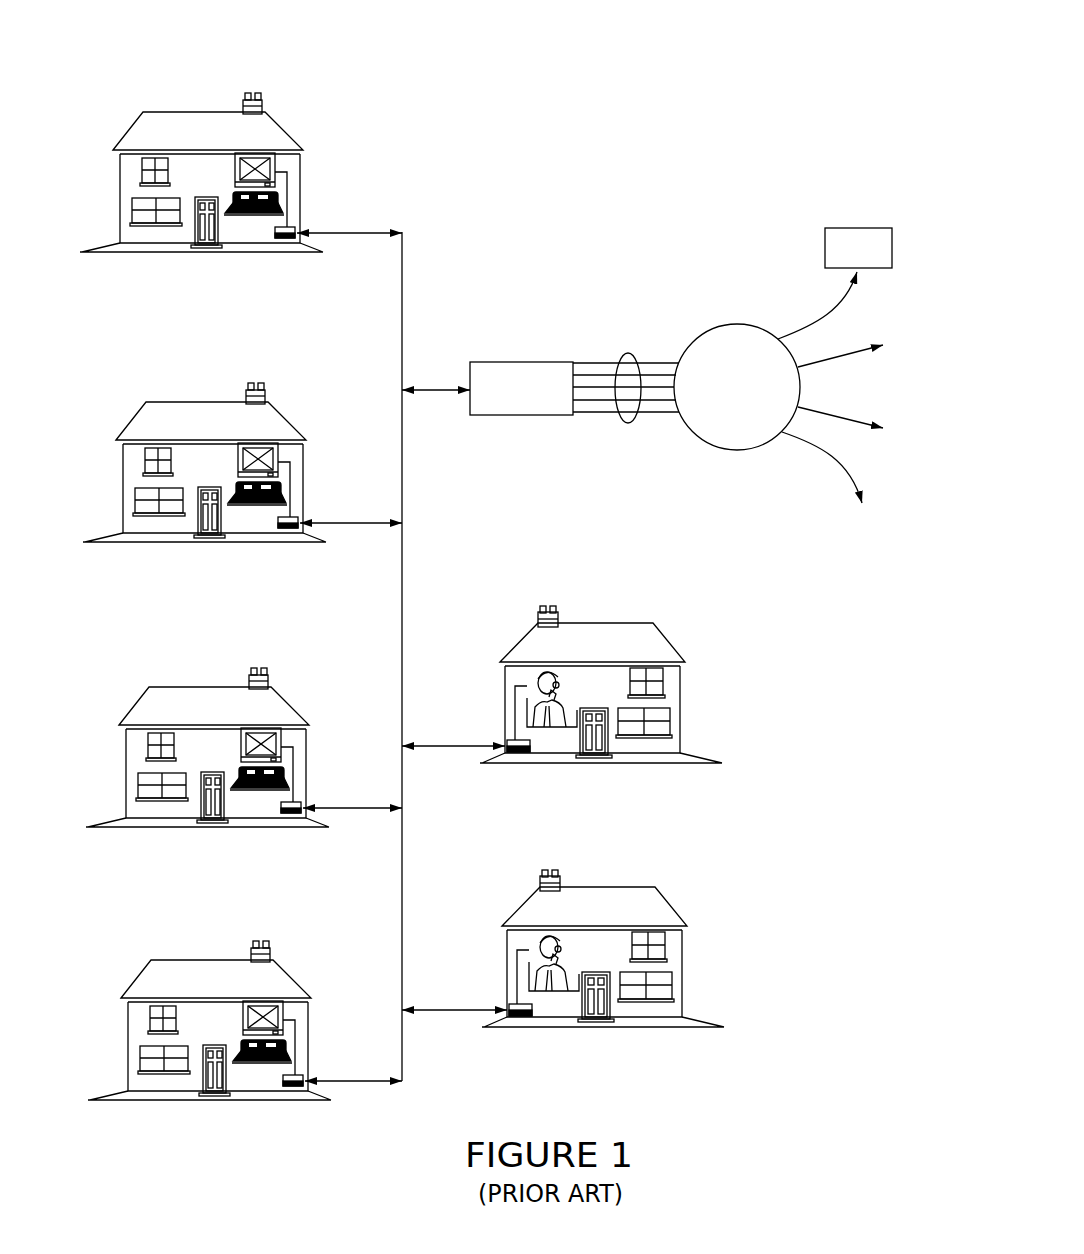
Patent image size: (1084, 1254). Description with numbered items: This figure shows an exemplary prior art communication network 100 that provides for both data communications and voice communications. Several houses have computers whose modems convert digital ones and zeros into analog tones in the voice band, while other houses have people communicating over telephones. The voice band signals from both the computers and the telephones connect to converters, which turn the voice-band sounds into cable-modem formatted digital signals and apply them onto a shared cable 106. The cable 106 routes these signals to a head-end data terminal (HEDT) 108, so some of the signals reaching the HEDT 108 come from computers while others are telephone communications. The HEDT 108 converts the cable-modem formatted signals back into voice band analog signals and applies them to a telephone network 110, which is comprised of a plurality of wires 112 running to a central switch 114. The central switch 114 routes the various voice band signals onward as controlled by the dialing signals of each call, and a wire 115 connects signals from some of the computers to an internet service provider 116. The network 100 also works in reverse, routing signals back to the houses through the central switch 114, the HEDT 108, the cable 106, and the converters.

The communication network 100 is at (702, 113).
The shared cable 106 is at (402, 268).
The head-end data terminal (HEDT) 108 is at (524, 362).
The telephone network 110 is at (628, 352).
The wires 112 is at (661, 352).
The central switch 114 is at (736, 324).
The wire 115 is at (850, 302).
The internet service provider 116 is at (860, 228).